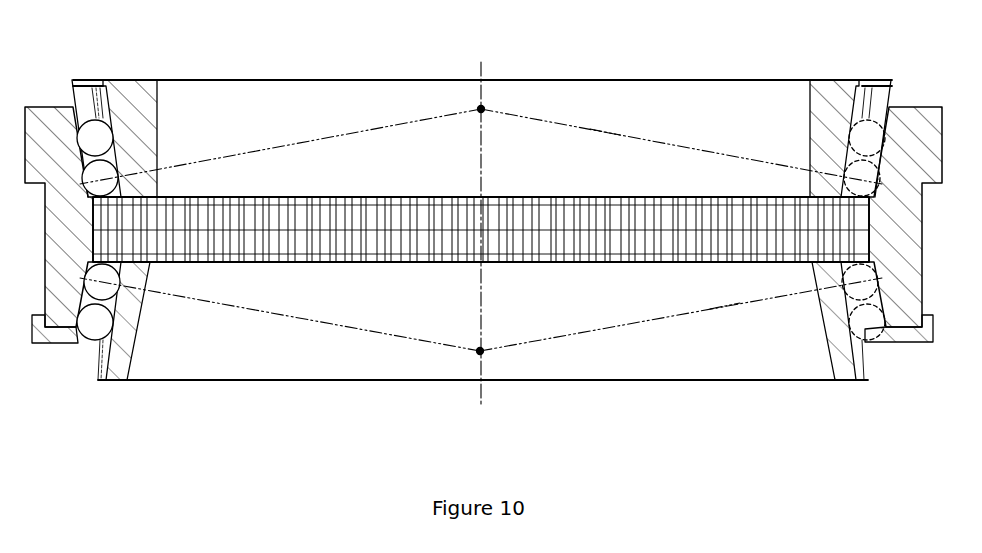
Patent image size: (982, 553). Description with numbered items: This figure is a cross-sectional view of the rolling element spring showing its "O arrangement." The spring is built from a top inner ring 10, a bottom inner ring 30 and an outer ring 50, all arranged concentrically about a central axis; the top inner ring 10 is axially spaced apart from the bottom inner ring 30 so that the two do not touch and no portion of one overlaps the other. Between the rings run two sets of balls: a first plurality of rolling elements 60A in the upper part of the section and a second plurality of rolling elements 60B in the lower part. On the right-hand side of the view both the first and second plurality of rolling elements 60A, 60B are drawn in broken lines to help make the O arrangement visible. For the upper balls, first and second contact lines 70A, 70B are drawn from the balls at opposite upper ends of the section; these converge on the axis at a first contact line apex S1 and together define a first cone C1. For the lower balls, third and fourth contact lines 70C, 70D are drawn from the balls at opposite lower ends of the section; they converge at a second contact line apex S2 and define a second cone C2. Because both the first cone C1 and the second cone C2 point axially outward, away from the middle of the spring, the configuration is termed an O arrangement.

The top inner ring 10 is at (121, 87).
The bottom inner ring 30 is at (113, 373).
The outer ring 50 is at (47, 120).
The first plurality of rolling elements 60A is at (100, 133).
The second plurality of rolling elements 60B is at (88, 330).
The first contact line 70A is at (316, 138).
The second contact line 70B is at (668, 144).
The third contact line 70C is at (297, 318).
The fourth contact line 70D is at (620, 327).
The first contact line apex S1 is at (482, 110).
The second contact line apex S2 is at (481, 353).
The first cone C1 is at (603, 130).
The second cone C2 is at (725, 308).